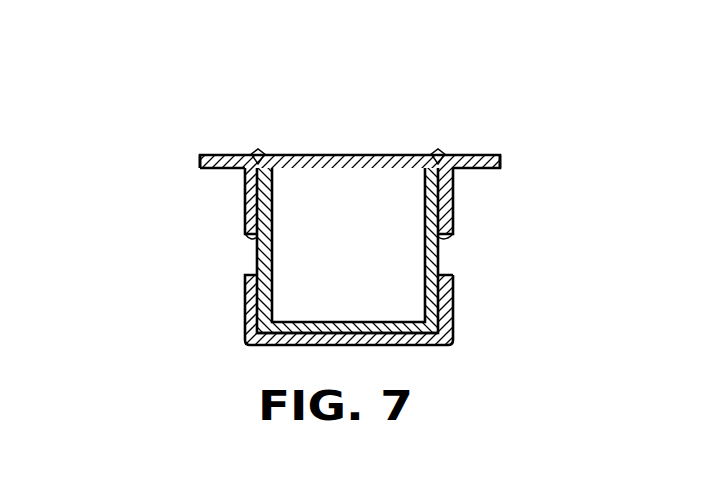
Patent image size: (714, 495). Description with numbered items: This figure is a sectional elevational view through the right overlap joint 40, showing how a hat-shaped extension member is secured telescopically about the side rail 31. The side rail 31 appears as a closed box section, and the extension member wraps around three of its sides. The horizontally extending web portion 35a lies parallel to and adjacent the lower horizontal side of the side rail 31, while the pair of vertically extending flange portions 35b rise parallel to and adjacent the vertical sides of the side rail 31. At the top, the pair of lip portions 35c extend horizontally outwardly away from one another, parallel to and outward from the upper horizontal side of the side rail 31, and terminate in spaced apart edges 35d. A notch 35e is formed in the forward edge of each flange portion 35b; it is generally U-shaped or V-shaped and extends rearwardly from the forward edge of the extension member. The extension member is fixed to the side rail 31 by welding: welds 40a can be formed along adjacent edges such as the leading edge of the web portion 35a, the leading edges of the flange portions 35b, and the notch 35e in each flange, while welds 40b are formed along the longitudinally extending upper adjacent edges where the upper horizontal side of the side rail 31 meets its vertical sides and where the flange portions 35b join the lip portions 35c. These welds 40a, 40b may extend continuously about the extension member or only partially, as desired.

The right overlap joint 40 is at (473, 97).
The side rail 31 is at (338, 156).
The horizontally extending web portion 35a is at (340, 345).
The vertically extending flange portions 35b is at (247, 310).
The lip portions 35c is at (223, 155).
The spaced apart edges 35d is at (200, 162).
The notch 35e is at (253, 272).
The welds 40a is at (252, 237).
The welds 40b is at (258, 150).